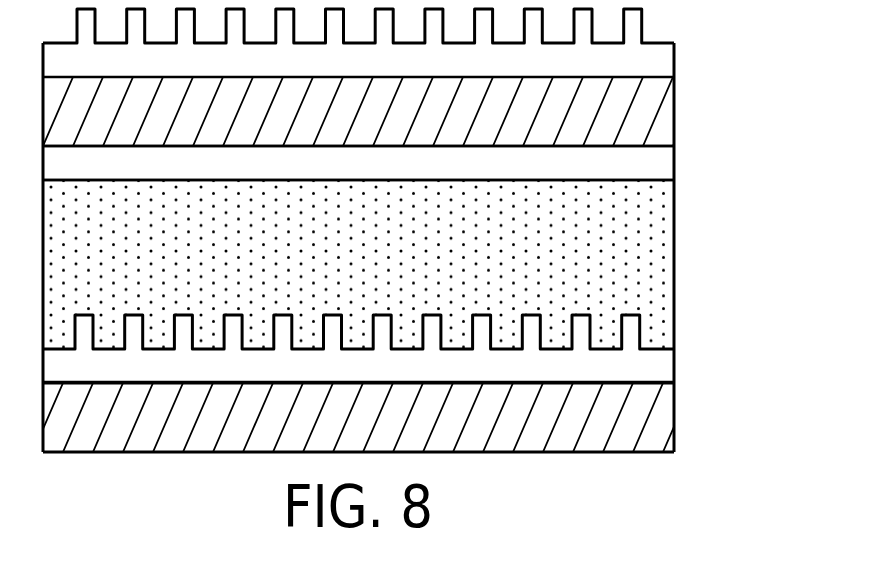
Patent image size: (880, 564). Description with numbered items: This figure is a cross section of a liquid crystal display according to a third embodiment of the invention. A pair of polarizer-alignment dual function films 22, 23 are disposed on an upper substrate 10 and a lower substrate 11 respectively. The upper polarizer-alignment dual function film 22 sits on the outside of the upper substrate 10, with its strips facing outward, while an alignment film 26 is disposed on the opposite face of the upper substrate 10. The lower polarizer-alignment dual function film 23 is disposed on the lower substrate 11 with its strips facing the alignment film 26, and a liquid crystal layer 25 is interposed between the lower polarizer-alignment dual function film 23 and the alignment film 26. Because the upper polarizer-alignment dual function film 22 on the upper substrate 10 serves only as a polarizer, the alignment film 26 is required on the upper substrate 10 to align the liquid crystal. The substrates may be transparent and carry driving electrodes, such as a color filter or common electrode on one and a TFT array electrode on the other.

The polarizer-alignment dual function film 22 is at (657, 58).
The upper substrate 10 is at (657, 105).
The alignment film 26 is at (657, 158).
The liquid crystal layer 25 is at (657, 243).
The polarizer-alignment dual function film 23 is at (657, 363).
The lower substrate 11 is at (657, 413).